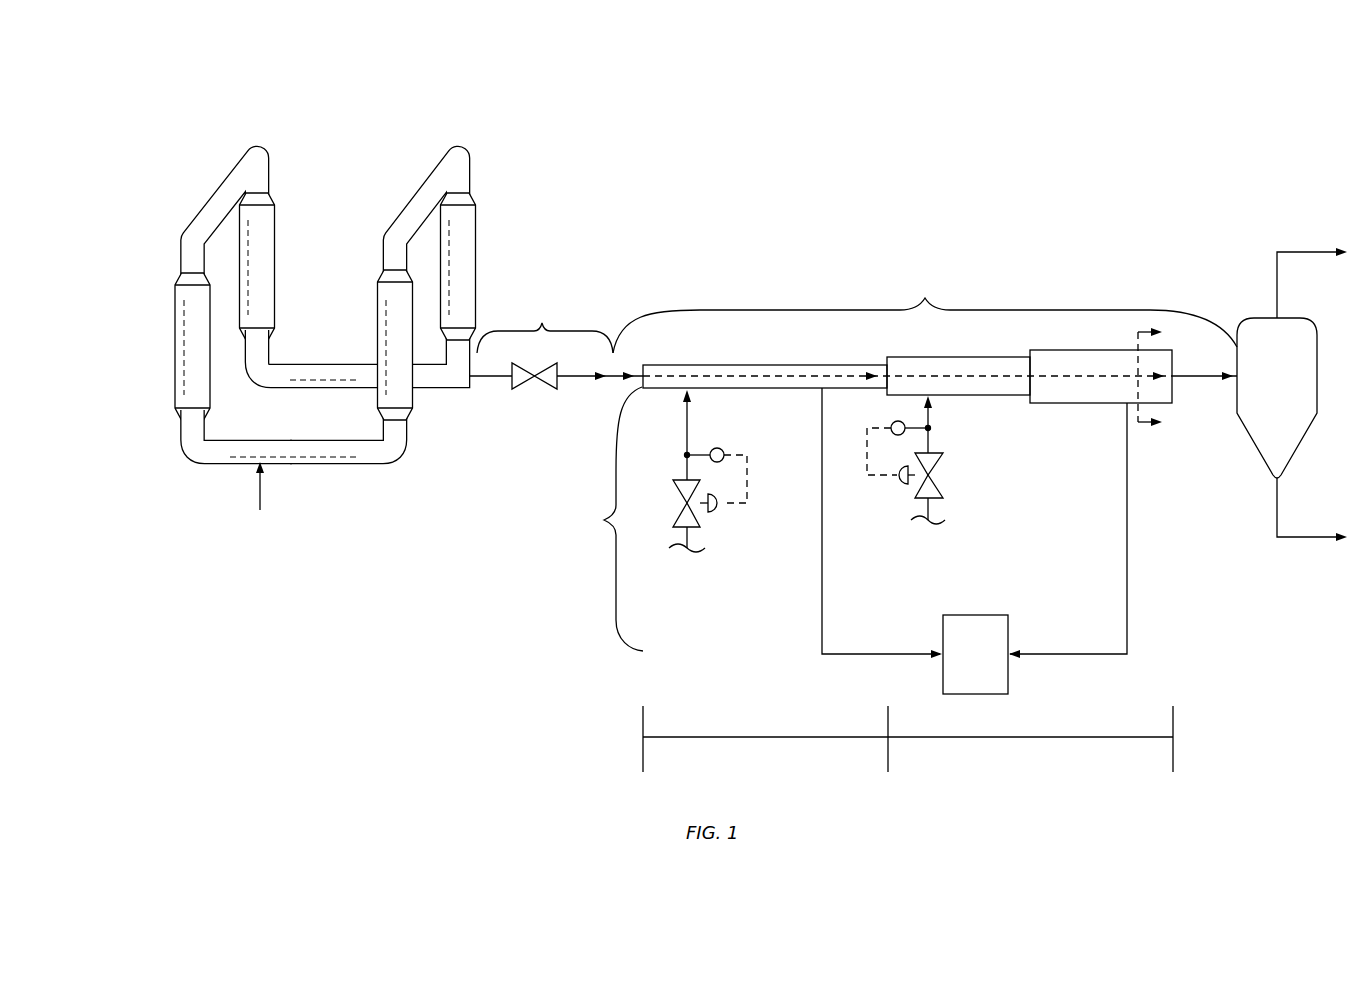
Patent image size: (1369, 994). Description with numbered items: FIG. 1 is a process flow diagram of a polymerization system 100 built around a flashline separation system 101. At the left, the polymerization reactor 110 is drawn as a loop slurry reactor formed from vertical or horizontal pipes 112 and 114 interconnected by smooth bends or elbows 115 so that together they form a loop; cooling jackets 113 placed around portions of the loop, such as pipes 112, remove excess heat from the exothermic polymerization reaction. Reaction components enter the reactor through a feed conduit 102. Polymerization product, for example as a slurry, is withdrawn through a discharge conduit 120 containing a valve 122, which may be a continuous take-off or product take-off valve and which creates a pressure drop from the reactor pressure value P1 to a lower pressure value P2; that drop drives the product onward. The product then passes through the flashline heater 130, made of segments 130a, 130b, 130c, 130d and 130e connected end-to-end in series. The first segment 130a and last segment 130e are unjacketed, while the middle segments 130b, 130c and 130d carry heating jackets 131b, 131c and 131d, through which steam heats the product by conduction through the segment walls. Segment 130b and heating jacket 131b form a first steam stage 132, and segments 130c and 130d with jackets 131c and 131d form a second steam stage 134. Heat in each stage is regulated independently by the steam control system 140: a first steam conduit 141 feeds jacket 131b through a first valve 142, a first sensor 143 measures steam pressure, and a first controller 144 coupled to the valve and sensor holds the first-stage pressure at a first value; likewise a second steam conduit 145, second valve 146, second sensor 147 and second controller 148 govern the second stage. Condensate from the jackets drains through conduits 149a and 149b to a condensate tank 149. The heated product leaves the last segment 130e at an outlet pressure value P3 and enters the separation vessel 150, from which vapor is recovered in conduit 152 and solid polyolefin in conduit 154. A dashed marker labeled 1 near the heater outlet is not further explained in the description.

The polymerization system 100 is at (975, 120).
The flashline separation system 101 is at (762, 262).
The feed conduit 102 is at (264, 493).
The polymerization reactor 110 is at (182, 249).
The pipes 112 is at (384, 258).
The cooling jackets 113 is at (478, 252).
The pipes 114 is at (348, 464).
The smooth bends or elbows 115 is at (192, 463).
The discharge conduit 120 is at (556, 337).
The valve 122 is at (530, 362).
The flashline heater 130 is at (925, 327).
The first segment 130a is at (622, 384).
The segment 130b is at (763, 389).
The segment 130c is at (1003, 378).
The segment 130d is at (1077, 378).
The last segment 130e is at (1200, 374).
The first heating jacket 131b is at (777, 365).
The heating jacket 131c is at (972, 357).
The heating jacket 131d is at (1087, 350).
The first steam stage 132 is at (767, 738).
The second steam stage 134 is at (1036, 738).
The steam control system 140 is at (606, 519).
The first steam conduit 141 is at (684, 424).
The first valve 142 is at (672, 503).
The first sensor 143 is at (684, 456).
The first controller 144 is at (719, 463).
The second steam conduit 145 is at (925, 413).
The second valve 146 is at (934, 470).
The second sensor 147 is at (931, 432).
The second controller 148 is at (893, 434).
The condensate tank 149 is at (993, 665).
The conduit 149a is at (823, 547).
The conduit 149b is at (1126, 529).
The separation vessel 150 is at (1297, 390).
The conduit 152 is at (1278, 286).
The conduit 154 is at (1278, 506).
The section indicator 1 is at (1157, 380).
The reactor pressure value P1 is at (481, 393).
The pressure value P2 is at (566, 389).
The outlet pressure value P3 is at (1230, 380).